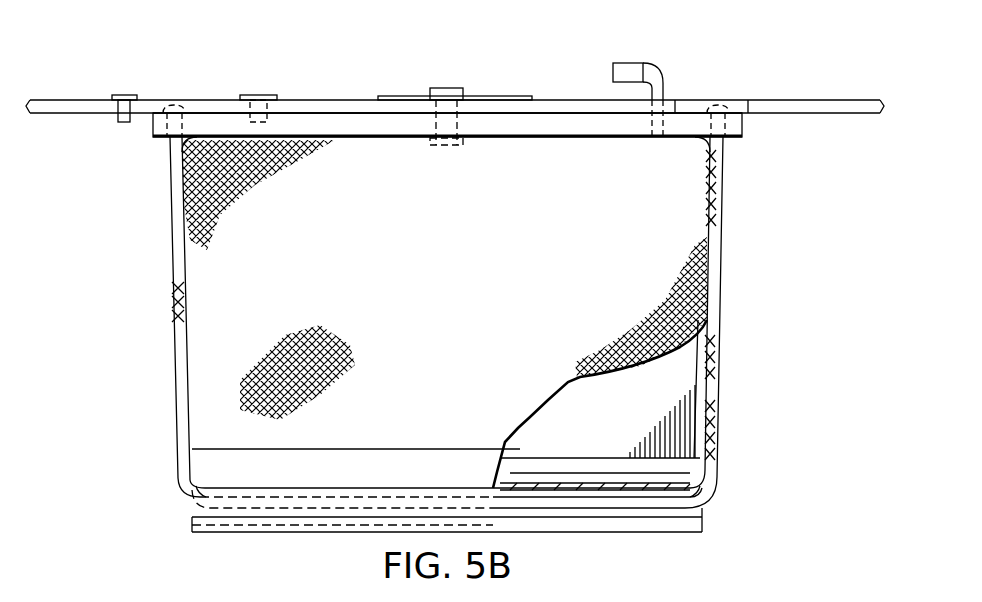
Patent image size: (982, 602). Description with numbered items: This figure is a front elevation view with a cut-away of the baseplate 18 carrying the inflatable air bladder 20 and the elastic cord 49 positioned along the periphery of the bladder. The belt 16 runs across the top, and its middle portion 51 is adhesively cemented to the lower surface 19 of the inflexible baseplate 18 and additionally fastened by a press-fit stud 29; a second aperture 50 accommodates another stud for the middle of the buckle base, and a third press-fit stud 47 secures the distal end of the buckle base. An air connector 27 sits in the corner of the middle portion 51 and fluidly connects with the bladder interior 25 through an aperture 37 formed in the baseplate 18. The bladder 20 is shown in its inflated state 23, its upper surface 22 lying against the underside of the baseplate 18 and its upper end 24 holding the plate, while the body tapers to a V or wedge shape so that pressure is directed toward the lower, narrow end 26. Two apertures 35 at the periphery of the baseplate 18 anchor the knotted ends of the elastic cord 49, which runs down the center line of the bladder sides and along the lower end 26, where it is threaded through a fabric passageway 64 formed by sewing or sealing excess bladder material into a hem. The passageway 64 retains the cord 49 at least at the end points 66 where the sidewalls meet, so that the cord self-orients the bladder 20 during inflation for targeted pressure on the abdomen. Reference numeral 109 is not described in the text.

The belt 16 is at (814, 96).
The baseplate 18 is at (552, 108).
The lower surface 19 is at (346, 135).
The bladder 20 is at (432, 309).
The upper surface 22 is at (378, 138).
The inflated state 23 is at (90, 426).
The upper end 24 is at (135, 203).
The bladder interior 25 is at (545, 436).
The lower end 26 is at (158, 477).
The air connector 27 is at (628, 63).
The press-fit stud 29 is at (447, 88).
The aperture 35 is at (160, 115).
The aperture 37 is at (658, 140).
The third press-fit stud 47 is at (122, 95).
The elastic cord 49 is at (175, 381).
The second aperture 50 is at (254, 92).
The middle portion 51 is at (500, 125).
The fabric passageway 64 is at (300, 507).
The end points 66 is at (197, 487).
The mounting plate 109 is at (405, 97).